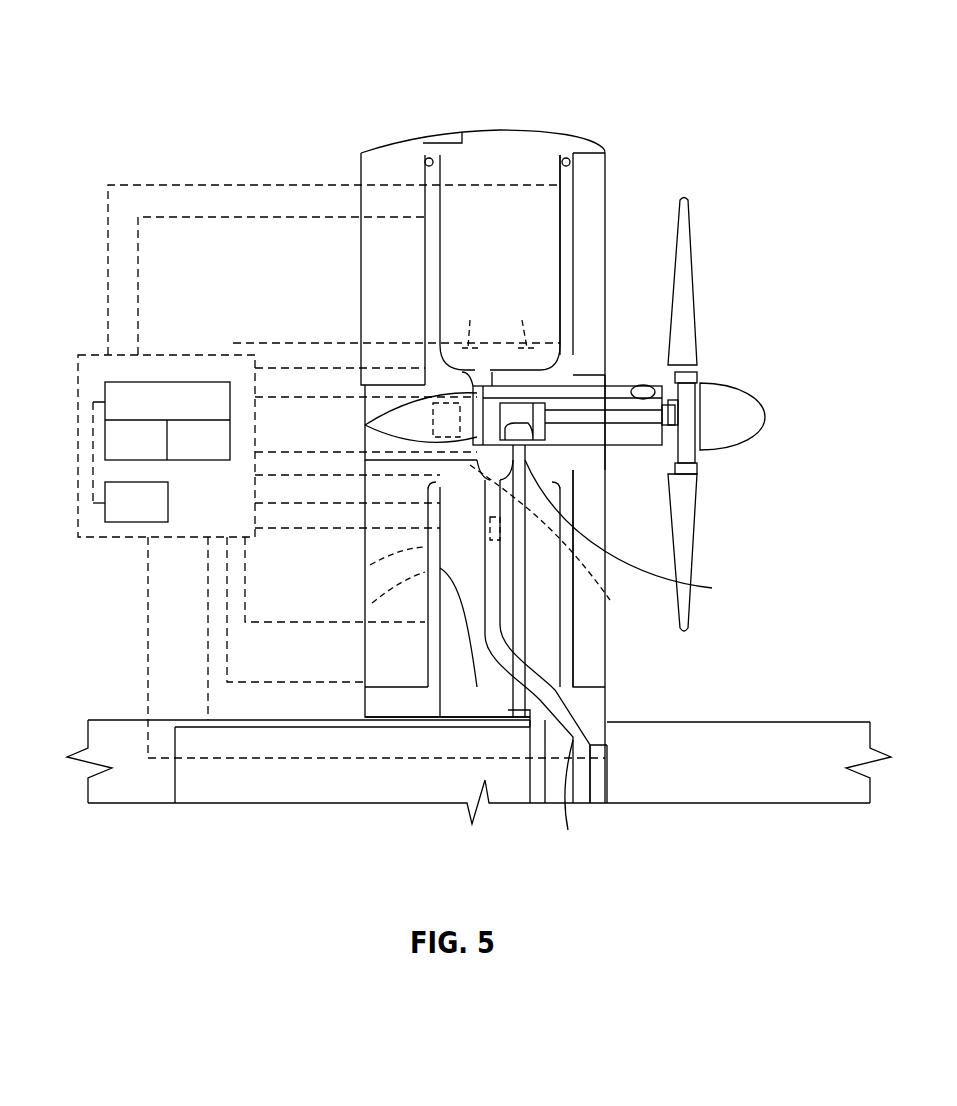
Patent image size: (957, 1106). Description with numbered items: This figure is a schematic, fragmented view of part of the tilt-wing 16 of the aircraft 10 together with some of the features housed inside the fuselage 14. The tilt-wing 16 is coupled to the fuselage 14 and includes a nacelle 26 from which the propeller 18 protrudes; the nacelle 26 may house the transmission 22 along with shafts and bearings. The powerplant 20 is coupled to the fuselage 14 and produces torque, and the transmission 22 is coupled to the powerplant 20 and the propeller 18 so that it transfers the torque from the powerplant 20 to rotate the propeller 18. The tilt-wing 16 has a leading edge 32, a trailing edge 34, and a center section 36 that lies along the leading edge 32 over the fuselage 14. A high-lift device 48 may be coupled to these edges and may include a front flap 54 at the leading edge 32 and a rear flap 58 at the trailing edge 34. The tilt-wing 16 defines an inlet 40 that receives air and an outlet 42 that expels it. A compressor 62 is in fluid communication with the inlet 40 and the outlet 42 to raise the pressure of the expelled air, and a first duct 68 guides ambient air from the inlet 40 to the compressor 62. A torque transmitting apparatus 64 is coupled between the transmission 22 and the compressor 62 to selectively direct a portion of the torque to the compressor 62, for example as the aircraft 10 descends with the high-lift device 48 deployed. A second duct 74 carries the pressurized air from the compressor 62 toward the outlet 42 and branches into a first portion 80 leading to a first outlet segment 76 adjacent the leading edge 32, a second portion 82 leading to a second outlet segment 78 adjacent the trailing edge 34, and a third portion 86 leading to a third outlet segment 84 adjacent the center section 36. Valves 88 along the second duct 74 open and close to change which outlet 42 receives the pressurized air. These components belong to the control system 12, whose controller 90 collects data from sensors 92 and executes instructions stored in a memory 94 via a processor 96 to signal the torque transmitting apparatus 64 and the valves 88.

The aircraft 10 is at (728, 62).
The control system 12 is at (95, 352).
The fuselage 14 is at (780, 722).
The tilt-wing 16 is at (500, 128).
The propeller 18 is at (697, 318).
The powerplant 20 is at (357, 797).
The transmission 22 is at (607, 470).
The nacelle 26 is at (610, 386).
The leading edge 32 is at (610, 150).
The trailing edge 34 is at (365, 714).
The center section 36 is at (603, 726).
The inlet 40 is at (647, 383).
The outlet 42 is at (545, 487).
The high-lift device 48 is at (516, 500).
The front flap 54 is at (598, 218).
The rear flap 58 is at (365, 262).
The compressor 62 is at (442, 397).
The torque transmitting apparatus 64 is at (477, 432).
The first duct 68 is at (643, 446).
The second duct 74 is at (612, 530).
The first outlet segment 76 is at (567, 157).
The second outlet segment 78 is at (428, 157).
The first portion 80 is at (560, 228).
The second portion 82 is at (440, 270).
The third outlet segment 84 is at (597, 800).
The third portion 86 is at (573, 805).
The valve 88 is at (622, 592).
The controller 90 is at (168, 382).
The sensor 92 is at (152, 518).
The memory 94 is at (152, 456).
The processor 96 is at (215, 456).